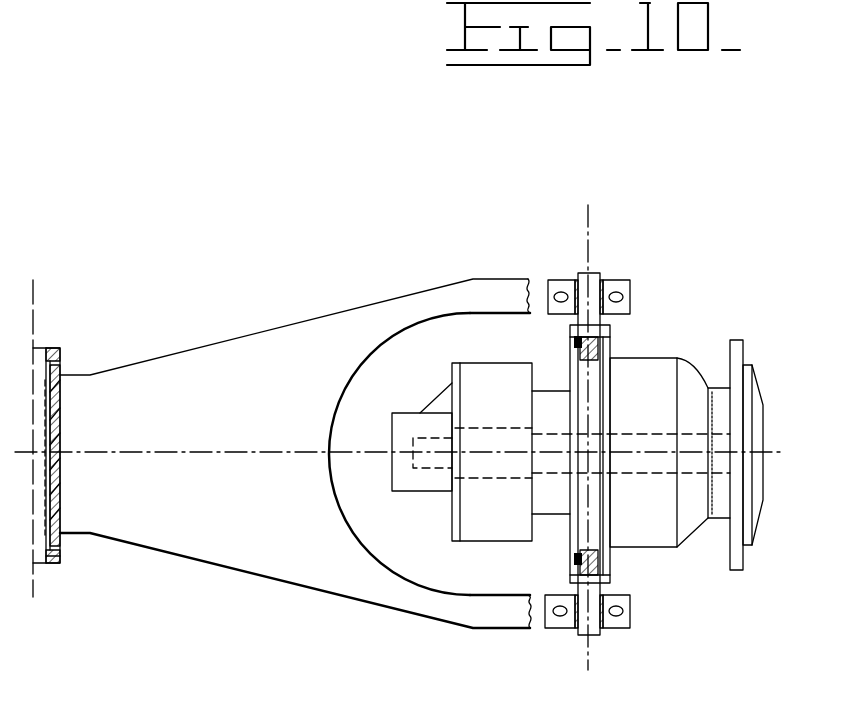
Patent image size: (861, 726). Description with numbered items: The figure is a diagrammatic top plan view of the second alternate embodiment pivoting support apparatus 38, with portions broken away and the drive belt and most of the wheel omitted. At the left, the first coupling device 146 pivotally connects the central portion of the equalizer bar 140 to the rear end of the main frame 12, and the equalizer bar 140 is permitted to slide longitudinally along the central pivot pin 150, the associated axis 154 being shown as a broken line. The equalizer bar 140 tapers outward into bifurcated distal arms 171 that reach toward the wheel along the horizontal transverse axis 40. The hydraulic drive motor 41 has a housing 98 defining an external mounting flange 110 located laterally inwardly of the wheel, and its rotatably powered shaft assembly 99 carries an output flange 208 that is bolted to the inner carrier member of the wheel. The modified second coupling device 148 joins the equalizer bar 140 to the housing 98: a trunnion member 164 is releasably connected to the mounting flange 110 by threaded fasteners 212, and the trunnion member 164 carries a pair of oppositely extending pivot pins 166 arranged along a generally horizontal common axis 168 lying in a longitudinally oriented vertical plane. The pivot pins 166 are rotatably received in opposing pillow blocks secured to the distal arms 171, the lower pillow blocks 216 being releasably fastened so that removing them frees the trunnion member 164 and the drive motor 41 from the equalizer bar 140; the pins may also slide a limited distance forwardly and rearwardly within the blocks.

The main frame 12 is at (66, 557).
The pivoting support apparatus 38 is at (290, 590).
The horizontal transverse axis 40 is at (240, 452).
The hydraulic drive motor 41 is at (443, 407).
The housing 98 is at (638, 363).
The shaft assembly 99 is at (660, 430).
The mounting flange 110 is at (600, 528).
The equalizer bar 140 is at (299, 318).
The first coupling device 146 is at (66, 364).
The second coupling device 148 is at (634, 305).
The central pivot pin 150 is at (38, 425).
The axis 154 is at (33, 318).
The trunnion member 164 is at (575, 333).
The pivot pins 166 is at (592, 276).
The common axis 168 is at (586, 230).
The bifurcated distal arms 171 is at (508, 290).
The output flange 208 is at (739, 342).
The threaded fasteners 212 is at (574, 560).
The lower pillow blocks 216 is at (627, 600).